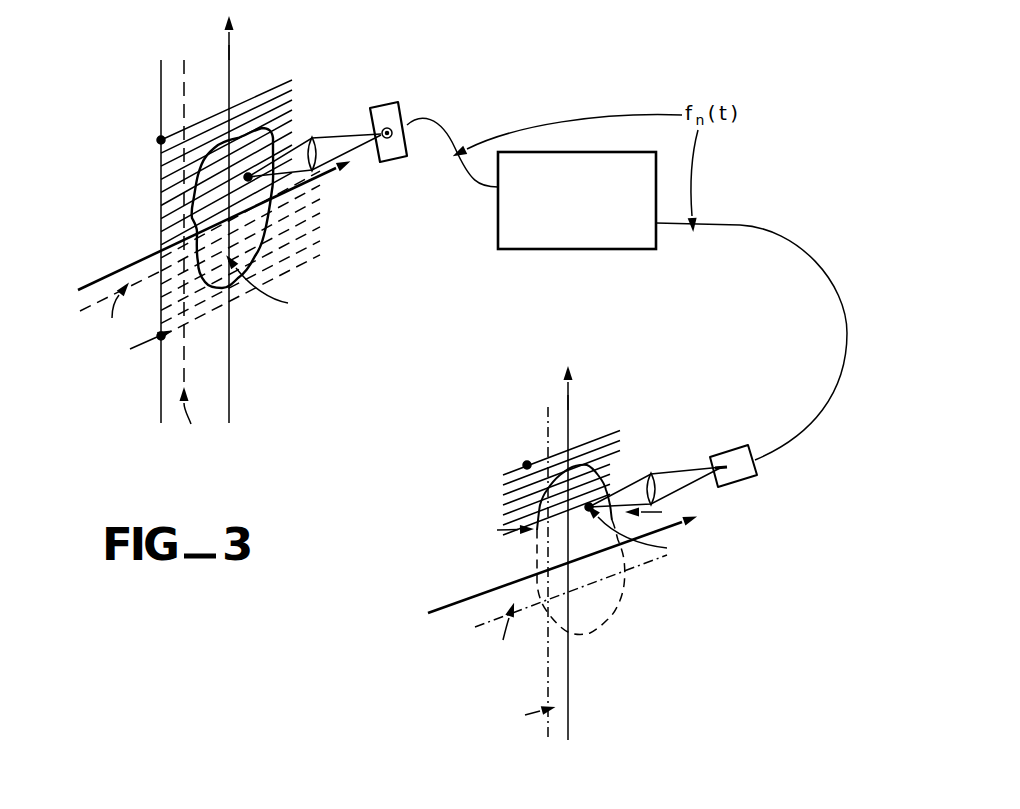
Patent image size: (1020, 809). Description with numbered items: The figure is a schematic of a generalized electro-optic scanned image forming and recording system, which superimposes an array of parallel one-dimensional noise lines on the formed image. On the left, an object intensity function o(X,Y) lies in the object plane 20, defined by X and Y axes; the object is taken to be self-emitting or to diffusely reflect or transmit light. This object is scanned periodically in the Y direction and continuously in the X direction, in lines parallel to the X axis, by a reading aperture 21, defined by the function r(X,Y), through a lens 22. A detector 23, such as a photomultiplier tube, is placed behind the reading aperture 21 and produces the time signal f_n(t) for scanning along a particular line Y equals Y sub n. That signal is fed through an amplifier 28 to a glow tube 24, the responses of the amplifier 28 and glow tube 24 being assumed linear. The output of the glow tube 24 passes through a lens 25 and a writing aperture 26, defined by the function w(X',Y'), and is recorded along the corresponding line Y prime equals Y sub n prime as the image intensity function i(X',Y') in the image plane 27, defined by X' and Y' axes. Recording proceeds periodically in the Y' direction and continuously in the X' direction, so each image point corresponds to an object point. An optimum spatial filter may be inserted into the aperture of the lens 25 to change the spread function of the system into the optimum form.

The object plane 20 is at (113, 66).
The reading aperture 21 is at (368, 124).
The lens 22 is at (305, 136).
The detector 23 is at (393, 101).
The glow tube 24 is at (737, 445).
The lens 25 is at (638, 468).
The writing aperture 26 is at (673, 507).
The image plane 27 is at (517, 441).
The amplifier 28 is at (547, 250).